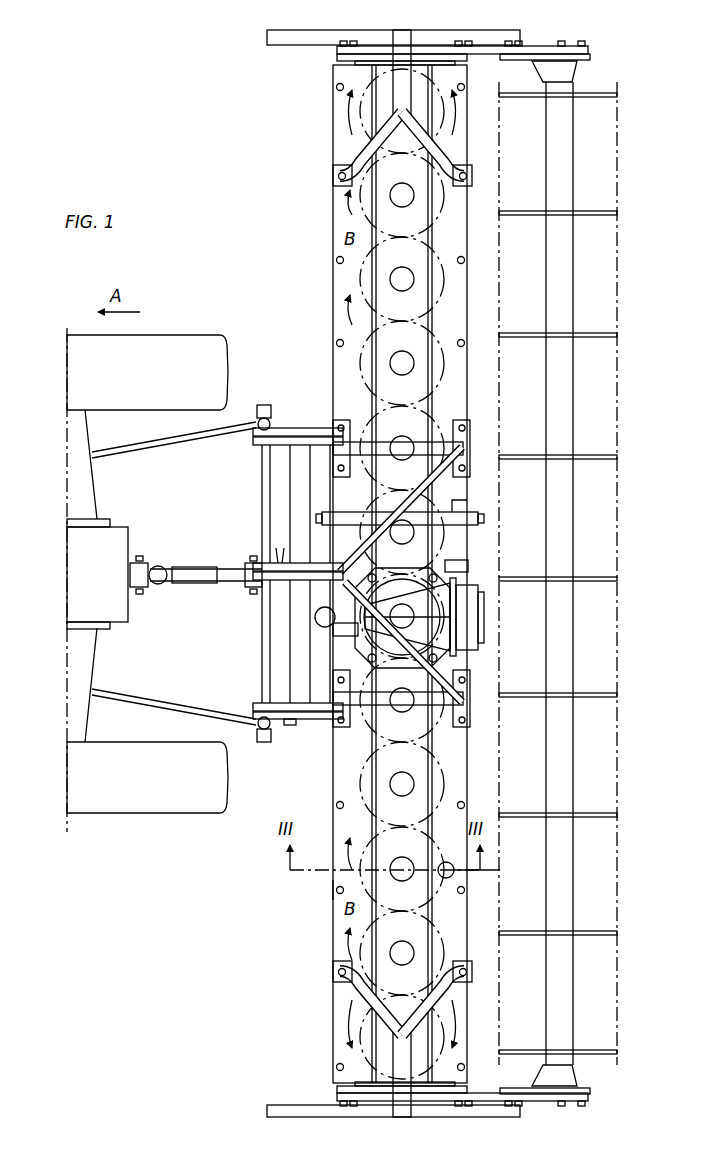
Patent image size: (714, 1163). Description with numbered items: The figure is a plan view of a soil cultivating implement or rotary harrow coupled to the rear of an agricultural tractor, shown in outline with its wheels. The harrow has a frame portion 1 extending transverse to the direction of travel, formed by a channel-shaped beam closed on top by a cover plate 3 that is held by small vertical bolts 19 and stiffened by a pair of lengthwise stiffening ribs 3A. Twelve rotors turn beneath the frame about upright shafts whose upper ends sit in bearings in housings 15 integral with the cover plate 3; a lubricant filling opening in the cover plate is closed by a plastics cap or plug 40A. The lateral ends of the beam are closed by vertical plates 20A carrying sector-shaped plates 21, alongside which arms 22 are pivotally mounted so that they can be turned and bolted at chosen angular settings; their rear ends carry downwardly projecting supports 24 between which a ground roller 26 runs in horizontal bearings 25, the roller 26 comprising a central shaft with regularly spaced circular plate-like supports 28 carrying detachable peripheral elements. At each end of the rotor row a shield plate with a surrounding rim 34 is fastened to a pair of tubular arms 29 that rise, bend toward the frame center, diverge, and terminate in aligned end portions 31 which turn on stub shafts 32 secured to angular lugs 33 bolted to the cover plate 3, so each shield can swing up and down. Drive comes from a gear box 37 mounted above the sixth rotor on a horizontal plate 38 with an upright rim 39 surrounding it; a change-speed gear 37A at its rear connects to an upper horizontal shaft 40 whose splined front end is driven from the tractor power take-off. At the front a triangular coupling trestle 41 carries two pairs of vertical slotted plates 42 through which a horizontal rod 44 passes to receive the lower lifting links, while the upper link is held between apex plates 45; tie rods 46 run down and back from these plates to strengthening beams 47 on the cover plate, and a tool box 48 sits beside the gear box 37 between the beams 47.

The frame portion 1 is at (330, 897).
The cover plate 3 is at (457, 300).
The stiffening ribs 3A is at (432, 300).
The housing 15 is at (402, 268).
The bolts 19 is at (337, 343).
The vertical plates 20A is at (352, 66).
The sector-shaped plates 21 is at (460, 48).
The arms 22 is at (545, 54).
The supports 24 is at (570, 1098).
The horizontal bearings 25 is at (586, 80).
The ground roller 26 is at (622, 520).
The plate-like supports 28 is at (596, 338).
The arms 29 is at (416, 20).
The end portions 31 is at (430, 160).
The stub shafts 32 is at (472, 176).
The angular lugs 33 is at (333, 176).
The rim 34 is at (300, 44).
The gear box 37 is at (478, 600).
The change-speed gear 37A is at (478, 630).
The horizontal plate 38 is at (440, 566).
The upright rim 39 is at (468, 568).
The horizontal shaft 40 is at (340, 620).
The cap or plug 40A is at (456, 887).
The coupling member or trestle 41 is at (290, 462).
The vertical plates 42 is at (288, 726).
The horizontal rod 44 is at (262, 622).
The vertical plates 45 is at (275, 553).
The tie rods 46 is at (360, 520).
The strengthening beams 47 is at (432, 442).
The box 48 is at (455, 506).